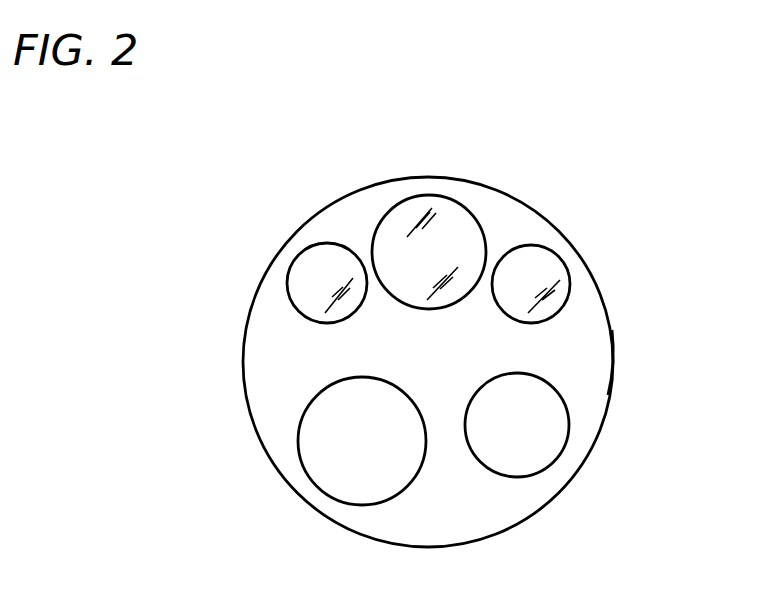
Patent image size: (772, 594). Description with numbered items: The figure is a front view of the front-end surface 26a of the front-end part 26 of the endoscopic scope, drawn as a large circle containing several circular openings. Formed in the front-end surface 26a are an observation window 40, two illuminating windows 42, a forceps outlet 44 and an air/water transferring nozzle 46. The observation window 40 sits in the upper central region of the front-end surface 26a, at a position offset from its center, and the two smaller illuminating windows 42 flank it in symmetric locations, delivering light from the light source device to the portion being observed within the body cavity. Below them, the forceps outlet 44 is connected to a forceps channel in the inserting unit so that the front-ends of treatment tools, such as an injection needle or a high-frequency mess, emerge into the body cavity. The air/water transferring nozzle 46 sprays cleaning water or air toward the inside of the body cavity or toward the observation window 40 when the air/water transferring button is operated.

The front-end part 26 is at (526, 200).
The front-end surface 26a is at (600, 363).
The observation window 40 is at (415, 200).
The illuminating windows 42 is at (297, 268).
The forceps outlet 44 is at (320, 468).
The air/water transferring nozzle 46 is at (548, 443).